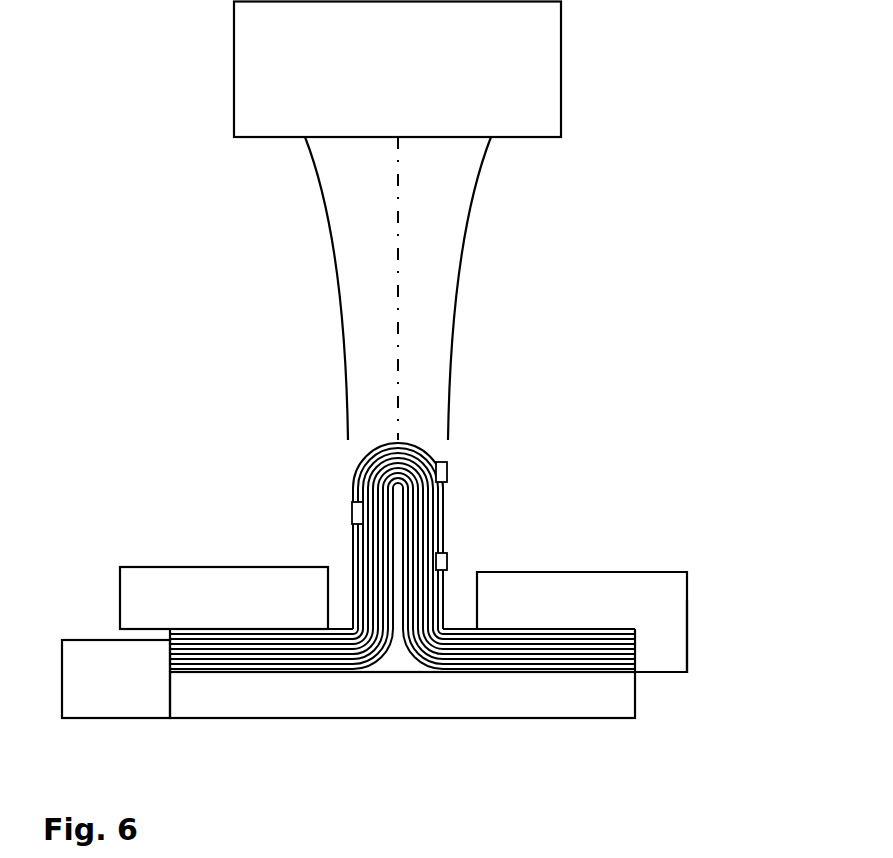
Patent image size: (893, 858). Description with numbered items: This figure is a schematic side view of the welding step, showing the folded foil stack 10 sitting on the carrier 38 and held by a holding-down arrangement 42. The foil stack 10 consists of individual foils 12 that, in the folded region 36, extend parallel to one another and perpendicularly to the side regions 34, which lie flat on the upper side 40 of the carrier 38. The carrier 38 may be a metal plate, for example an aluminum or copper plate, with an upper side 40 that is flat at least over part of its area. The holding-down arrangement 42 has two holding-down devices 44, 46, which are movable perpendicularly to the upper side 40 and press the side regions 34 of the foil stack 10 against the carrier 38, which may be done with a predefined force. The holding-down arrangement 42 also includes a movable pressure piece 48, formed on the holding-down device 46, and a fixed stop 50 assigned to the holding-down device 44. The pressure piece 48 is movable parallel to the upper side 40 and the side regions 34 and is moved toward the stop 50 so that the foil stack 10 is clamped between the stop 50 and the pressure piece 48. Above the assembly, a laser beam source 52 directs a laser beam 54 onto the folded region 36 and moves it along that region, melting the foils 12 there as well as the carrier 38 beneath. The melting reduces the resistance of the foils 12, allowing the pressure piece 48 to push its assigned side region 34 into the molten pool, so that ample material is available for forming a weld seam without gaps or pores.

The foil stack 10 is at (399, 596).
The foils 12 is at (423, 527).
The side regions 34 is at (270, 655).
The folded region 36 is at (388, 510).
The carrier 38 is at (460, 702).
The upper side 40 is at (397, 673).
The holding-down arrangement 42 is at (150, 538).
The holding-down device 44 is at (216, 590).
The holding-down device 46 is at (577, 604).
The pressure piece 48 is at (667, 653).
The stop 50 is at (107, 665).
The laser beam source 52 is at (411, 77).
The laser beam 54 is at (462, 243).